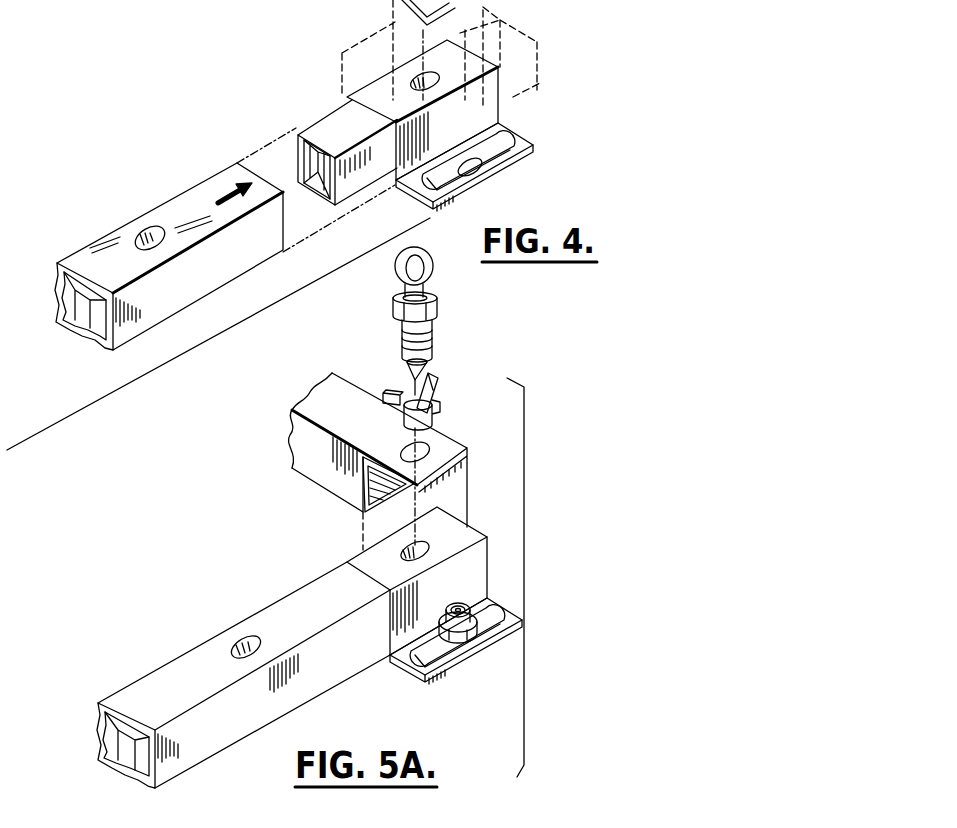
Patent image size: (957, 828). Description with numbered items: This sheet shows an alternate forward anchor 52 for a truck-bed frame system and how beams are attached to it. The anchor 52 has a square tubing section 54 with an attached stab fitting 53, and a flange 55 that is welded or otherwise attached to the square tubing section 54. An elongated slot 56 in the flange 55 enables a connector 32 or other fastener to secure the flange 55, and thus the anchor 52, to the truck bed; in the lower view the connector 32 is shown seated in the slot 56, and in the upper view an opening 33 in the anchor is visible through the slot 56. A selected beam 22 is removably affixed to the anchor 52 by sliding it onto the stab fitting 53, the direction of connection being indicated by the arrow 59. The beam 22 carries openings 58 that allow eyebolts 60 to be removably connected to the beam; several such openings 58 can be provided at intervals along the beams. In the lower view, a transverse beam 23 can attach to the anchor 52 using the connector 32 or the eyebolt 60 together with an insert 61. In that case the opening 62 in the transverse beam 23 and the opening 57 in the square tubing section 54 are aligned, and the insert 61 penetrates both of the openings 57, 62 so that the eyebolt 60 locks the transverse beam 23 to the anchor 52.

In FIG. 4, the beam 22 is at (225, 239).
In FIG. 5A, the beam 22 is at (243, 675).
In FIG. 5A, the transverse beam 23 is at (307, 457).
In FIG. 5A, the connector 32 is at (458, 640).
In FIG. 4, the bolt hole 33 is at (473, 170).
In FIG. 4, the forward anchor 52 is at (467, 122).
In FIG. 5A, the forward anchor 52 is at (416, 595).
In FIG. 4, the stab fitting 53 is at (333, 128).
In FIG. 4, the square tubing section 54 is at (419, 122).
In FIG. 5A, the square tubing section 54 is at (416, 581).
In FIG. 4, the flange 55 is at (495, 167).
In FIG. 5A, the flange 55 is at (452, 652).
In FIG. 4, the slot 56 is at (500, 154).
In FIG. 5A, the slot 56 is at (433, 653).
In FIG. 4, the opening 57 is at (413, 80).
In FIG. 5A, the opening 57 is at (400, 552).
In FIG. 4, the beam opening 58 is at (170, 202).
In FIG. 5A, the beam opening 58 is at (242, 641).
In FIG. 4, the arrow 59 is at (232, 193).
In FIG. 5A, the eyebolt 60 is at (427, 273).
In FIG. 5A, the insert 61 is at (437, 381).
In FIG. 5A, the opening 62 is at (428, 450).